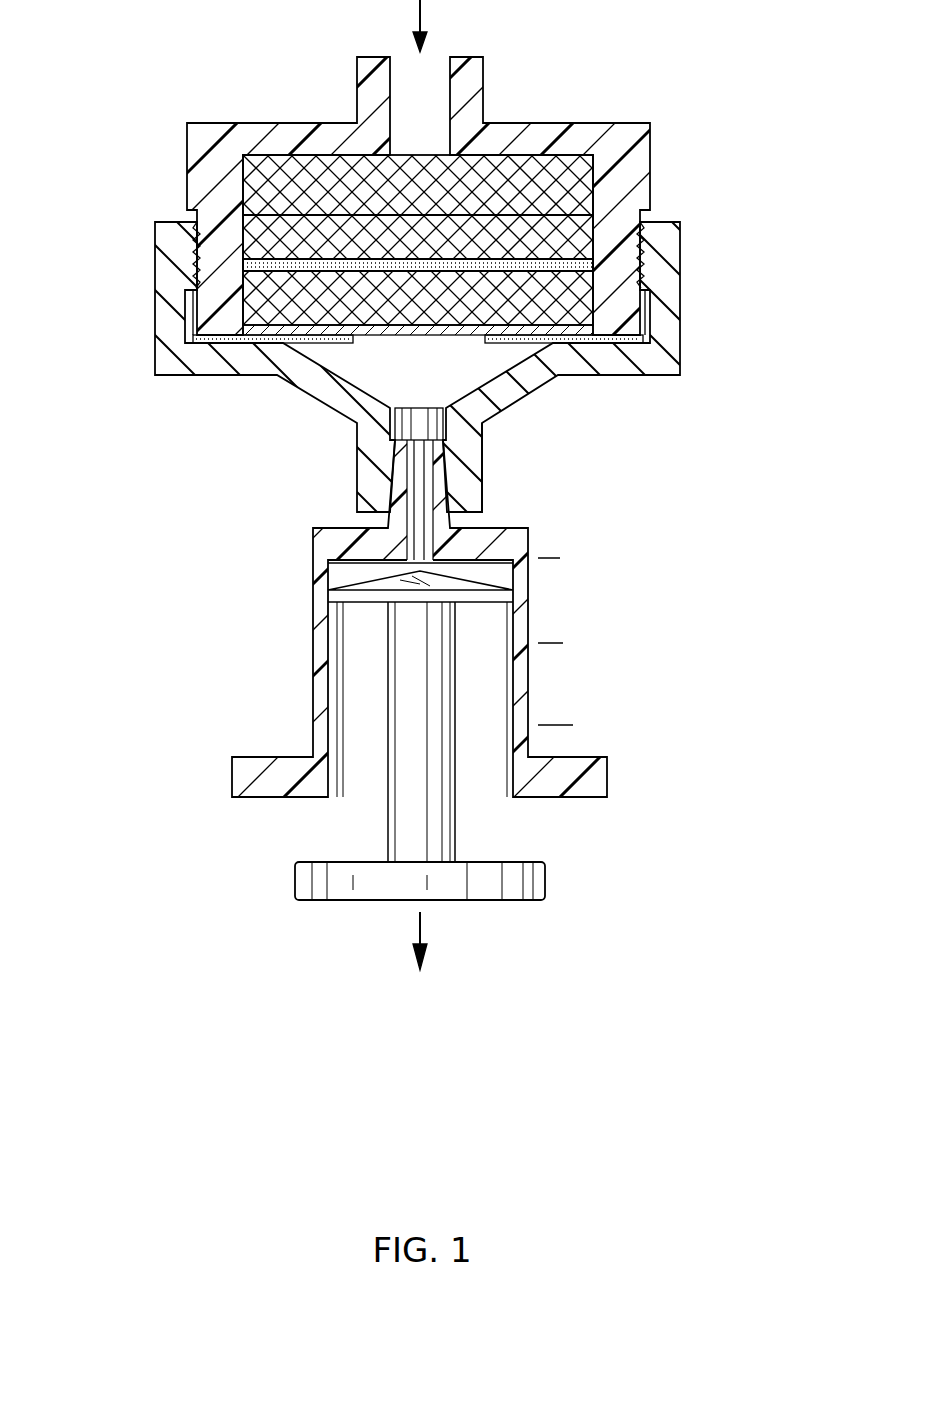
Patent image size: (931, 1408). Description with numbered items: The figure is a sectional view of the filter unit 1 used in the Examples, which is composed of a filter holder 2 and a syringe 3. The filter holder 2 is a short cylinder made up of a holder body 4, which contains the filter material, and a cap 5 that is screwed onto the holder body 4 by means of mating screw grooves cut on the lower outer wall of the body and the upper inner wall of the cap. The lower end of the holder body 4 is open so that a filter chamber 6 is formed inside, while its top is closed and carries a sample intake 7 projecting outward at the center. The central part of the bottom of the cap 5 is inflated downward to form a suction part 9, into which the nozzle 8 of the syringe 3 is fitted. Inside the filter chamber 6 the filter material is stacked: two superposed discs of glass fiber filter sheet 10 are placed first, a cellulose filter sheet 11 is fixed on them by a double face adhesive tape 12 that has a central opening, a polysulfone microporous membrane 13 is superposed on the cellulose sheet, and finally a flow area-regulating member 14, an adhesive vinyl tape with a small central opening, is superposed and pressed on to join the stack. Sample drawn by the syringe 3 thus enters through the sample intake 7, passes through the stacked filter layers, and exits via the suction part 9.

The filter unit 1 is at (104, 272).
The filter holder 2 is at (128, 208).
The syringe 3 is at (313, 628).
The holder body 4 is at (650, 150).
The cap 5 is at (183, 380).
The filter chamber 6 is at (500, 197).
The sample intake 7 is at (355, 88).
The nozzle 8 is at (397, 483).
The suction part 9 is at (480, 460).
The glass fiber filter sheet 10 is at (197, 312).
The cellulose filter sheet 11 is at (595, 280).
The double face adhesive tape 12 is at (597, 253).
The polysulfone microporous membrane 13 is at (195, 322).
The flow area-regulating member 14 is at (625, 337).